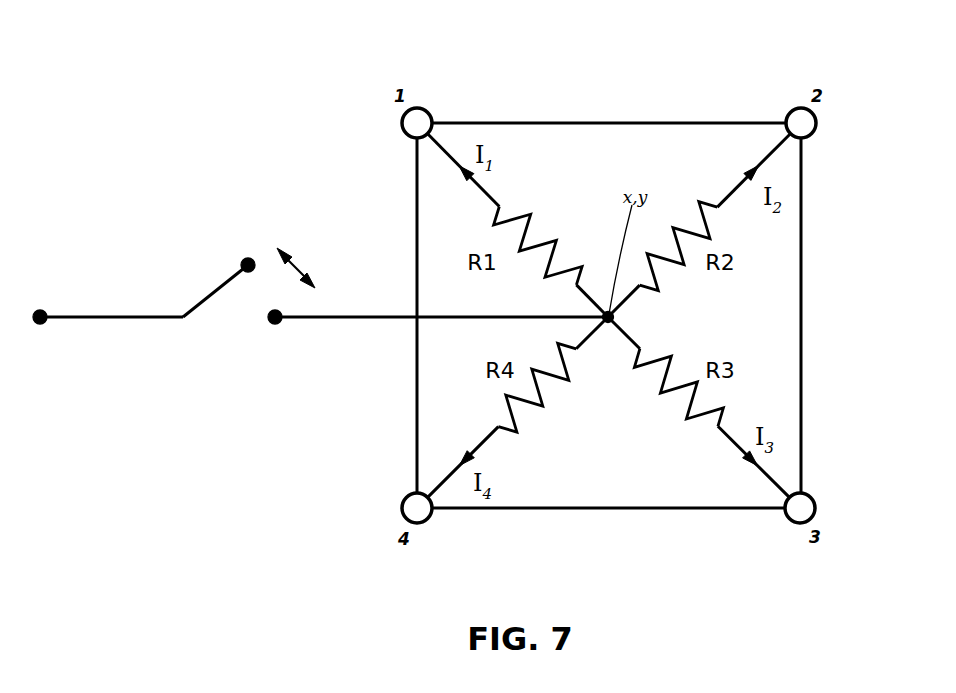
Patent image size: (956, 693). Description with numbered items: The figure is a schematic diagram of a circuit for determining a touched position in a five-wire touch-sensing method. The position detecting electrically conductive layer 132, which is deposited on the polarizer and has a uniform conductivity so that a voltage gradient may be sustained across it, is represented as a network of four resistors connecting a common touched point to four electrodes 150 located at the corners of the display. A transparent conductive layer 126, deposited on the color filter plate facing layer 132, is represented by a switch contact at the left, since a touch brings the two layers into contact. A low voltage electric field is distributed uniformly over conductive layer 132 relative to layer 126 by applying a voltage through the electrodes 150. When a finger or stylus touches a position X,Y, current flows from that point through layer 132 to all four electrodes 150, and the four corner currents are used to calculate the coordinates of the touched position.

The electrodes 150 is at (427, 108).
The transparent conductive layer 126 is at (120, 320).
The transparent conductive layer 132 is at (360, 317).